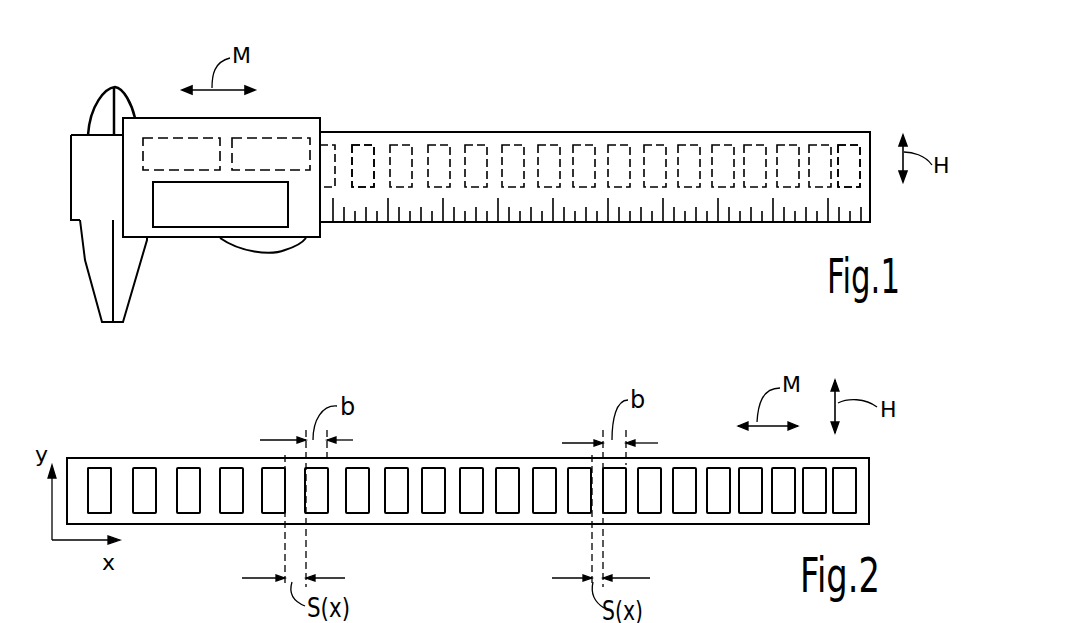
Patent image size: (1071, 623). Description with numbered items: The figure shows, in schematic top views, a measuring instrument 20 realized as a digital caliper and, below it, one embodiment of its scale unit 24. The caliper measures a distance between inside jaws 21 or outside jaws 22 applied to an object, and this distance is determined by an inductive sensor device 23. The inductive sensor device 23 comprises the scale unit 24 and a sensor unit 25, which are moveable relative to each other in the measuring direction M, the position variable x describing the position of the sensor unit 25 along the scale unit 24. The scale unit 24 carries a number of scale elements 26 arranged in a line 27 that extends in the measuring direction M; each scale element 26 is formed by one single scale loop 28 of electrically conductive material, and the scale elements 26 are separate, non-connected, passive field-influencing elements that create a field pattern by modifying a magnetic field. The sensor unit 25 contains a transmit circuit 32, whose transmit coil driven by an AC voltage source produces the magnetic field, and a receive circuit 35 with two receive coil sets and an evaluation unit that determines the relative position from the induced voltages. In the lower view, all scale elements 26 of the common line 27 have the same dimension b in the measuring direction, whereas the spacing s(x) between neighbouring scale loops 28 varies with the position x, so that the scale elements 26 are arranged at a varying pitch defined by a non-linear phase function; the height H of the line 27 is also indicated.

In FIG. 1, the measuring instrument 20 is at (492, 193).
In FIG. 1, the inside jaws 21 is at (100, 282).
In FIG. 1, the outside jaws 22 is at (103, 107).
In FIG. 1, the inductive sensor device 23 is at (300, 135).
In FIG. 1, the scale unit 24 is at (595, 129).
In FIG. 2, the scale unit 24 is at (472, 412).
In FIG. 1, the sensor unit 25 is at (308, 204).
In FIG. 1, the scale elements 26 is at (720, 145).
In FIG. 2, the scale elements 26 is at (192, 468).
In FIG. 2, the line 27 is at (882, 485).
In FIG. 1, the scale loop 28 is at (527, 132).
In FIG. 2, the scale loop 28 is at (743, 336).
In FIG. 1, the transmit circuit 32 is at (167, 137).
In FIG. 1, the receive circuit 35 is at (278, 137).